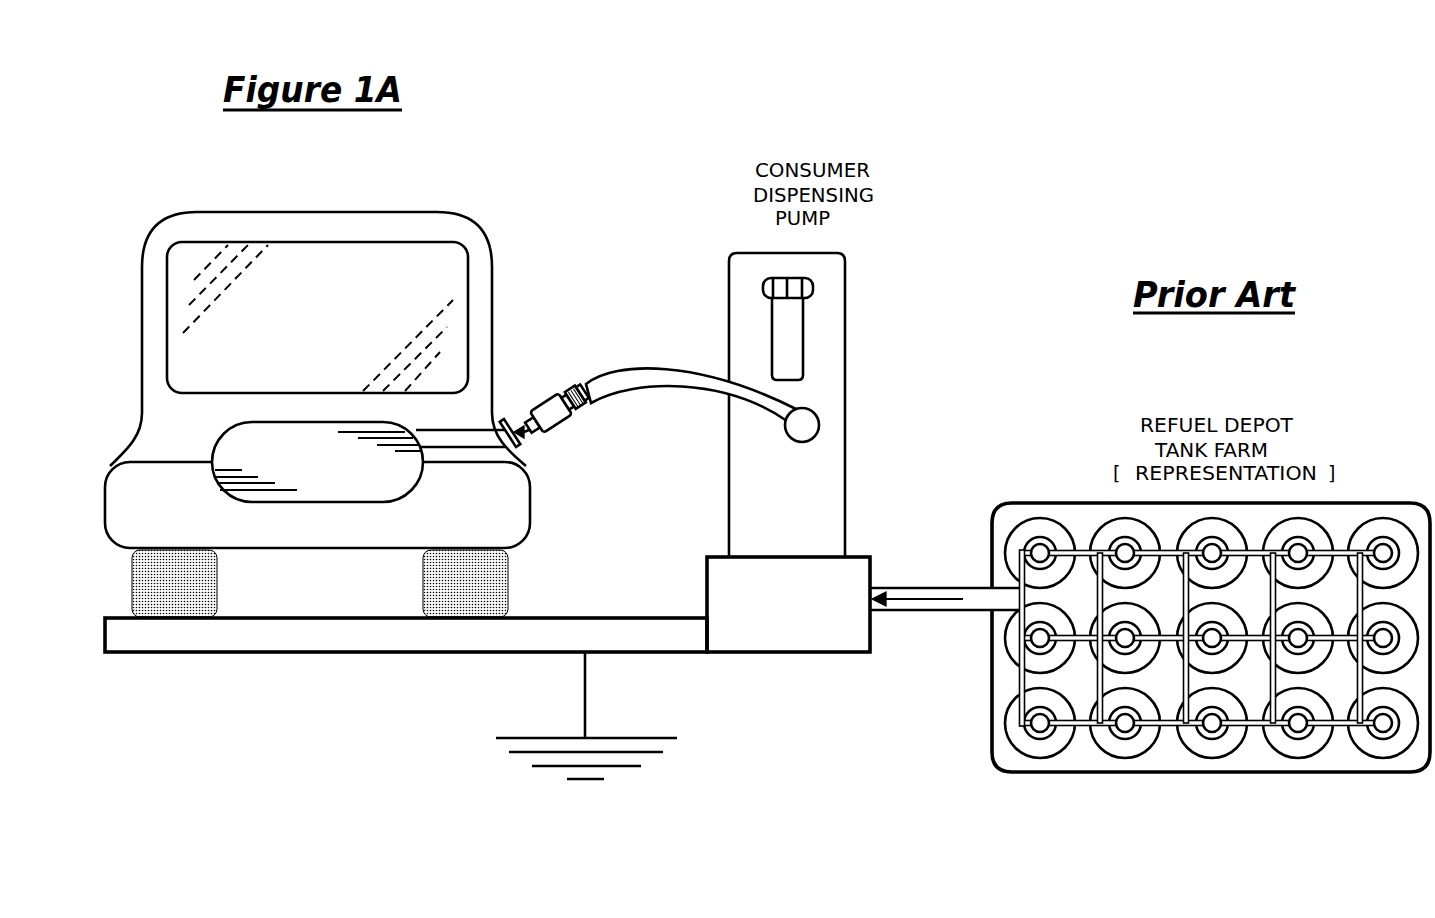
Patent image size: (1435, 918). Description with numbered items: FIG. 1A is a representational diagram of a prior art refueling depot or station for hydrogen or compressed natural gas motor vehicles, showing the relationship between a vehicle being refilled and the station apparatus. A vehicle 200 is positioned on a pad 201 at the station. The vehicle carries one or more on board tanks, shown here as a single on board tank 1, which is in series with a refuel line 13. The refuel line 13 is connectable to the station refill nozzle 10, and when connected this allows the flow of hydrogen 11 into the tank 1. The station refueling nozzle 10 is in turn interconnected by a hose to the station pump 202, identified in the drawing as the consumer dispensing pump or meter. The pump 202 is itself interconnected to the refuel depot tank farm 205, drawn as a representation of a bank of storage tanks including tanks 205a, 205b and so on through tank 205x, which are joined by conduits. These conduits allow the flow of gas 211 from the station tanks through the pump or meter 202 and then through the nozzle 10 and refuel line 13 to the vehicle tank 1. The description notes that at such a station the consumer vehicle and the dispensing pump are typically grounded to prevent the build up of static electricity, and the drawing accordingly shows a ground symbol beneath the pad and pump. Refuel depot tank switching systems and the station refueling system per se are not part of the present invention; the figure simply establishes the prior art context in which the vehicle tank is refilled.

The on board tank 1 is at (298, 423).
The station refill nozzle 10 is at (558, 428).
The hydrogen 11 is at (525, 427).
The refuel line 13 is at (453, 437).
The vehicle 200 is at (477, 238).
The pad 201 is at (217, 654).
The station pump 202 is at (847, 325).
The refuel depot tank farm 205 is at (1211, 683).
The tank 205a is at (1382, 743).
The tank 205b is at (1292, 752).
The tank 205x is at (1043, 752).
The flow of gas 211 is at (908, 587).